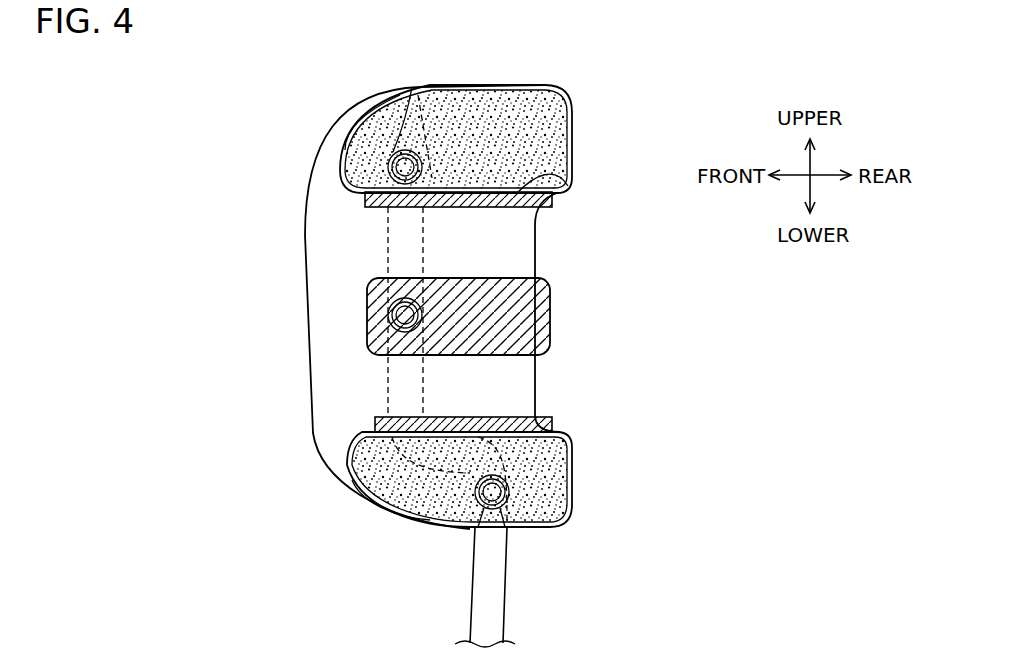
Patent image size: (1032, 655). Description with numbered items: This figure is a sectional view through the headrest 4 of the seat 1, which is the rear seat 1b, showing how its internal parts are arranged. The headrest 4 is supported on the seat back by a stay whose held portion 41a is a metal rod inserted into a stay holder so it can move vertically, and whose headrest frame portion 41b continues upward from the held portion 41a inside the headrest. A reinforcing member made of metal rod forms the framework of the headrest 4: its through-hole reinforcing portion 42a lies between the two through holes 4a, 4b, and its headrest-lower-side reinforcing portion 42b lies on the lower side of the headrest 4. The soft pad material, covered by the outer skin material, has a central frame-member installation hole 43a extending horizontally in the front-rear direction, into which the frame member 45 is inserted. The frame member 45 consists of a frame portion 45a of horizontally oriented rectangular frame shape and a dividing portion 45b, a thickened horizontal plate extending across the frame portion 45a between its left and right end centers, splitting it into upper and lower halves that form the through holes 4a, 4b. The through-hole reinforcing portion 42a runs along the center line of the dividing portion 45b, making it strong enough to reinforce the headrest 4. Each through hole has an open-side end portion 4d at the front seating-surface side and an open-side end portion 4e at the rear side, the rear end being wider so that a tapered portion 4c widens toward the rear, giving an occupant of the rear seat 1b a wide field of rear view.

The seat 1 is at (368, 71).
The rear seat 1b is at (335, 84).
The headrest 4 is at (300, 172).
The through hole 4a is at (490, 237).
The through hole 4b is at (490, 383).
The tapered portion 4c is at (457, 255).
The open-side end portion 4d is at (380, 392).
The open-side end portion 4e is at (523, 362).
The held portion 41a is at (505, 583).
The headrest frame portion 41b is at (412, 87).
The through-hole reinforcing portion 42a is at (427, 298).
The headrest-lower-side reinforcing portion 42b is at (507, 540).
The frame-member installation hole 43a is at (568, 186).
The frame member 45 is at (357, 323).
The frame portion 45a is at (370, 200).
The dividing portion 45b is at (367, 305).